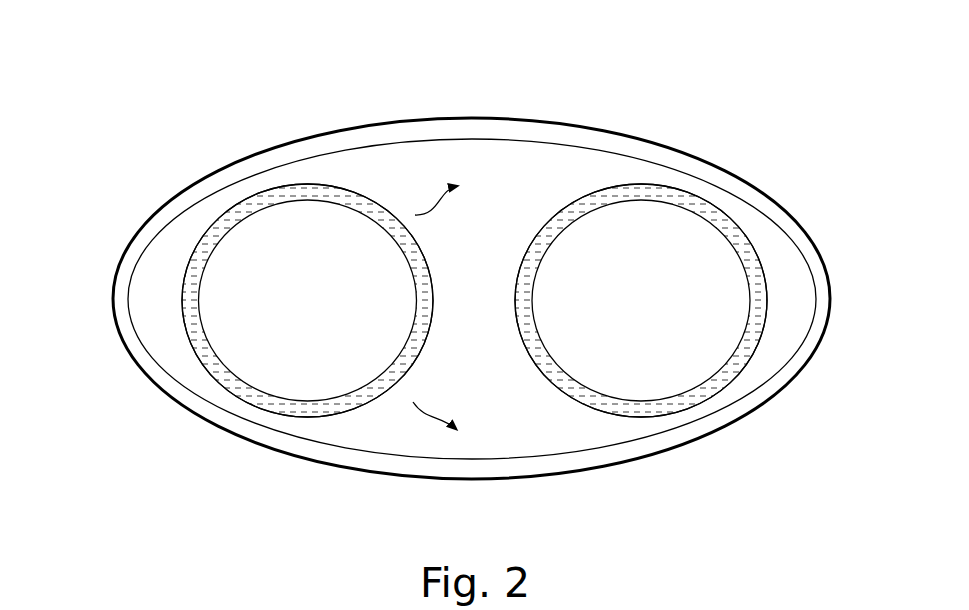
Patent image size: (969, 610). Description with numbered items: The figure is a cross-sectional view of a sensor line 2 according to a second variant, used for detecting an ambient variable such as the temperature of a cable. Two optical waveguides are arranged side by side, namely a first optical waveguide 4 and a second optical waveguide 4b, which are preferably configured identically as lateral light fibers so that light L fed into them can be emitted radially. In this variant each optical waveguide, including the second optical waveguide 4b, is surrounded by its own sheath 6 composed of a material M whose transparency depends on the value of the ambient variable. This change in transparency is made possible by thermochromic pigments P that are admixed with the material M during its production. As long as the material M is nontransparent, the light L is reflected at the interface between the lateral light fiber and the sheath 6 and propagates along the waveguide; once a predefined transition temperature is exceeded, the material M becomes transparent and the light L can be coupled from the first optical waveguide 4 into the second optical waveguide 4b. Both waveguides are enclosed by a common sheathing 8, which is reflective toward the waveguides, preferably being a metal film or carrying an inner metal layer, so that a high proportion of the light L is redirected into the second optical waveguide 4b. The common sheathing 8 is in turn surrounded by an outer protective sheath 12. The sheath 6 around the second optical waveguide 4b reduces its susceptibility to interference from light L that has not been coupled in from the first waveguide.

The sensor line 2 is at (471, 247).
The outer protective sheath 12 is at (692, 155).
The common sheathing 8 is at (313, 153).
The optical waveguide 4 is at (247, 360).
The second optical waveguide 4b is at (642, 390).
The sheath 6 is at (527, 269).
The material M is at (242, 207).
The thermochromic pigments P is at (188, 303).
The light L is at (494, 300).